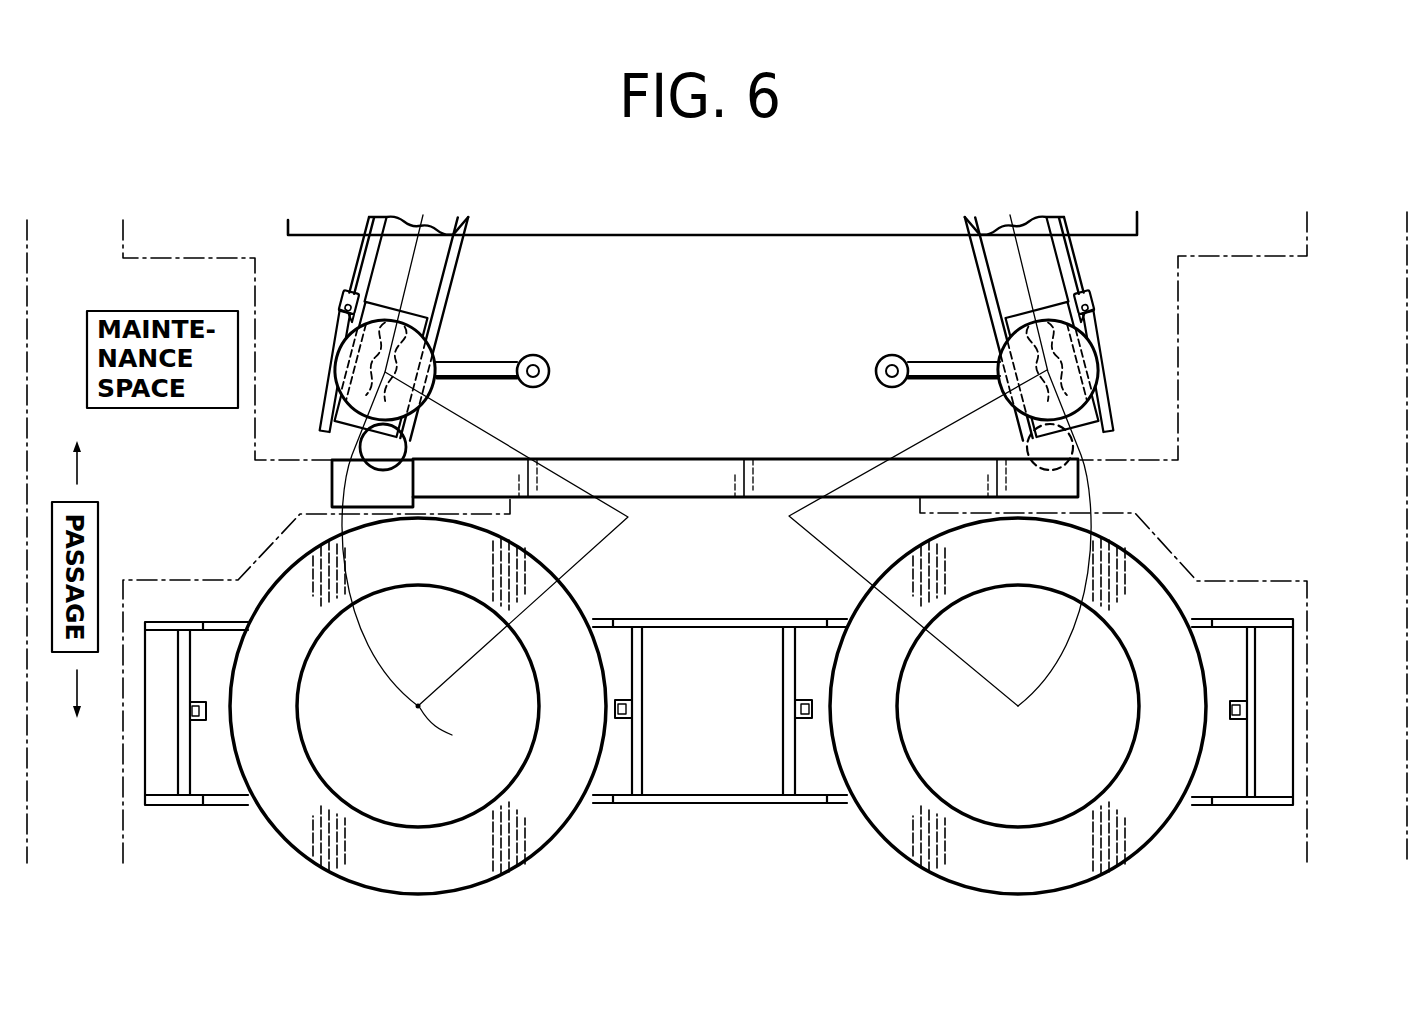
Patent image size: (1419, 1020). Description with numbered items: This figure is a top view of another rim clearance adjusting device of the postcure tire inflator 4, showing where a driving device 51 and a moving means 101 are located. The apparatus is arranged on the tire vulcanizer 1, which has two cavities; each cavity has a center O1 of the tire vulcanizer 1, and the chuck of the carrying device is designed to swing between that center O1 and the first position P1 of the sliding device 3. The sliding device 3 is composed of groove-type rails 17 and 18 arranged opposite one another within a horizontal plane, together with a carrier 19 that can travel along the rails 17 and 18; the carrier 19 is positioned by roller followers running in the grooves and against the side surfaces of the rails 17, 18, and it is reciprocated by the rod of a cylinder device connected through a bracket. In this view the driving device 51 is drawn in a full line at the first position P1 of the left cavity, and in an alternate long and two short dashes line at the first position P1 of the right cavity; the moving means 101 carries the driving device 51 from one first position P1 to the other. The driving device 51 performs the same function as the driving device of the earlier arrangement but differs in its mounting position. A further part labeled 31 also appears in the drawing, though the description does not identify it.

The tire vulcanizer 1 is at (684, 818).
The sliding device 3 is at (408, 257).
The postcure tire inflator 4 is at (772, 198).
The groove-type rail 17 is at (434, 328).
The groove-type rail 18 is at (346, 324).
The carrier 19 is at (385, 370).
The link arm 31 is at (438, 392).
The driving device 51 is at (403, 448).
The moving means 101 is at (705, 458).
The first position P1 is at (337, 443).
The center of the tire vulcanizer O1 is at (449, 734).